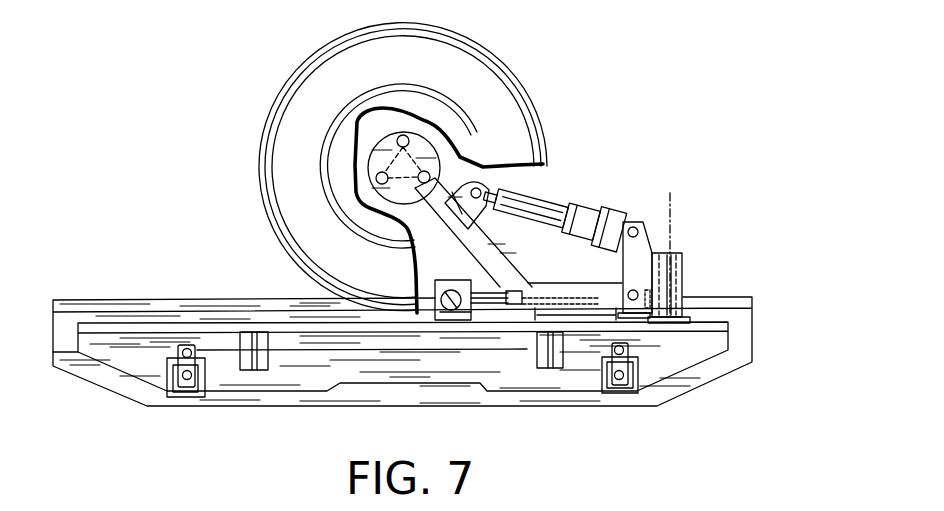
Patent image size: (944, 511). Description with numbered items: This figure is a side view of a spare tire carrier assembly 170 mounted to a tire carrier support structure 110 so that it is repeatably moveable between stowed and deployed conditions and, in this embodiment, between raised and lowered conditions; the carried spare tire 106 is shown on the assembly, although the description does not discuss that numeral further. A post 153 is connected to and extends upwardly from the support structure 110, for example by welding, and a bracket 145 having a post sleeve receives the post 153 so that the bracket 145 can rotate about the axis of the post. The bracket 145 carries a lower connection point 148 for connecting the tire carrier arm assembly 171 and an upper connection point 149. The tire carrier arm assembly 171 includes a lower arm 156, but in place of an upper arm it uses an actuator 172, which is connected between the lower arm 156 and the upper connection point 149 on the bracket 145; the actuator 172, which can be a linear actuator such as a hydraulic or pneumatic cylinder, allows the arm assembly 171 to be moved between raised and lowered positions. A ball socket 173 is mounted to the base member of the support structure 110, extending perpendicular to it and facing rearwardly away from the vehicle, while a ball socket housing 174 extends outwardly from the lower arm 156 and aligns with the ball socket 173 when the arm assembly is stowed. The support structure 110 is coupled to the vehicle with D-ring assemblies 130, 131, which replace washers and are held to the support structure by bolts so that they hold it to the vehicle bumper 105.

The vehicle bumper 105 is at (742, 310).
The wheel 106 is at (481, 87).
The tire carrier support structure 110 is at (131, 347).
The D-ring assembly 130 is at (188, 388).
The D-ring assembly 131 is at (618, 388).
The bracket 145 is at (646, 234).
The lower connection point 148 is at (632, 290).
The upper connection point 149 is at (633, 226).
The post 153 is at (683, 273).
The lower arm 156 is at (468, 229).
The spare tire carrier assembly 170 is at (660, 135).
The tire carrier arm assembly 171 is at (565, 129).
The actuator 172 is at (551, 203).
The ball socket 173 is at (450, 303).
The ball socket housing 174 is at (476, 308).